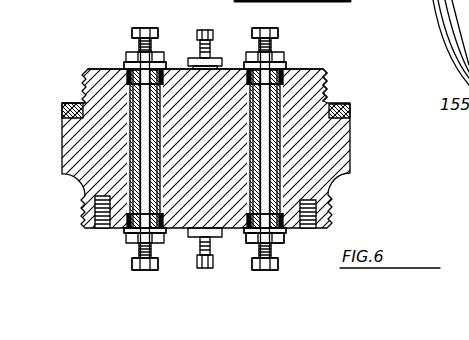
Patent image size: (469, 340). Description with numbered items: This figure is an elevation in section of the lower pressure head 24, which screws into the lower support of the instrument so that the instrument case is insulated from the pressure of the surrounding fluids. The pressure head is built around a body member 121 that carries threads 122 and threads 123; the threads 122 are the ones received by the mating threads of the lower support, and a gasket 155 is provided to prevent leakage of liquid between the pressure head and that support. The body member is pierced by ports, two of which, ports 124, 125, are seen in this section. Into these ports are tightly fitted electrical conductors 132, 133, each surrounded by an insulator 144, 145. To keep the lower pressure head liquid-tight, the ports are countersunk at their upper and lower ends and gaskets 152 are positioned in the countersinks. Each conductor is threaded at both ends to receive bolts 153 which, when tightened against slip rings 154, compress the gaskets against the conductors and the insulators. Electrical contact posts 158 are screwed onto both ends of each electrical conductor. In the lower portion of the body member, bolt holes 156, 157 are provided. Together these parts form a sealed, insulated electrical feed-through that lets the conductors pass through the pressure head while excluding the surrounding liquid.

The lower pressure head 24 is at (46, 165).
The body member 121 is at (320, 71).
The threads 122 is at (329, 94).
The threads 123 is at (328, 212).
The port 124 is at (155, 133).
The port 125 is at (268, 136).
The electrical conductor 132 is at (158, 107).
The electrical conductor 133 is at (268, 108).
The insulator 144 is at (157, 165).
The insulator 145 is at (268, 165).
The gaskets 152 is at (245, 80).
The bolts 153 is at (202, 62).
The slip rings 154 is at (127, 66).
The gasket 155 is at (71, 101).
The bolt hole 156 is at (88, 226).
The bolt hole 157 is at (286, 236).
The electrical contact posts 158 is at (272, 28).